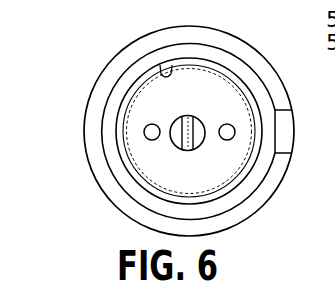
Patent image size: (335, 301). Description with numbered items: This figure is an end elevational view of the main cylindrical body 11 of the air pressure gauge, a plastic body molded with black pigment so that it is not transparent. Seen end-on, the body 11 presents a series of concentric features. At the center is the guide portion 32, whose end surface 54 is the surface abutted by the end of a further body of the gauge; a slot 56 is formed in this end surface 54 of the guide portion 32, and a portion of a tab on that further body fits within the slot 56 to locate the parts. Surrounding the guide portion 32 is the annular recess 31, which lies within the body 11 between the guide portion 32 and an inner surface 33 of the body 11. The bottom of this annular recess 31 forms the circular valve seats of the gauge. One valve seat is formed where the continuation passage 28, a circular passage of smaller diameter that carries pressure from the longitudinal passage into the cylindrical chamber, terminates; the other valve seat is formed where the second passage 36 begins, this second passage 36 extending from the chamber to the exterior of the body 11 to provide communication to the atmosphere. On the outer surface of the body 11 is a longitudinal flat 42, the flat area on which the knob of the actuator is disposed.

The main cylindrical body 11 is at (253, 45).
The continuation passage 28 is at (149, 129).
The annular recess 31 is at (202, 83).
The guide portion 32 is at (176, 115).
The inner surface 33 is at (159, 70).
The second passage 36 is at (229, 135).
The longitudinal flat 42 is at (276, 138).
The end surface 54 is at (174, 139).
The slot 56 is at (183, 150).